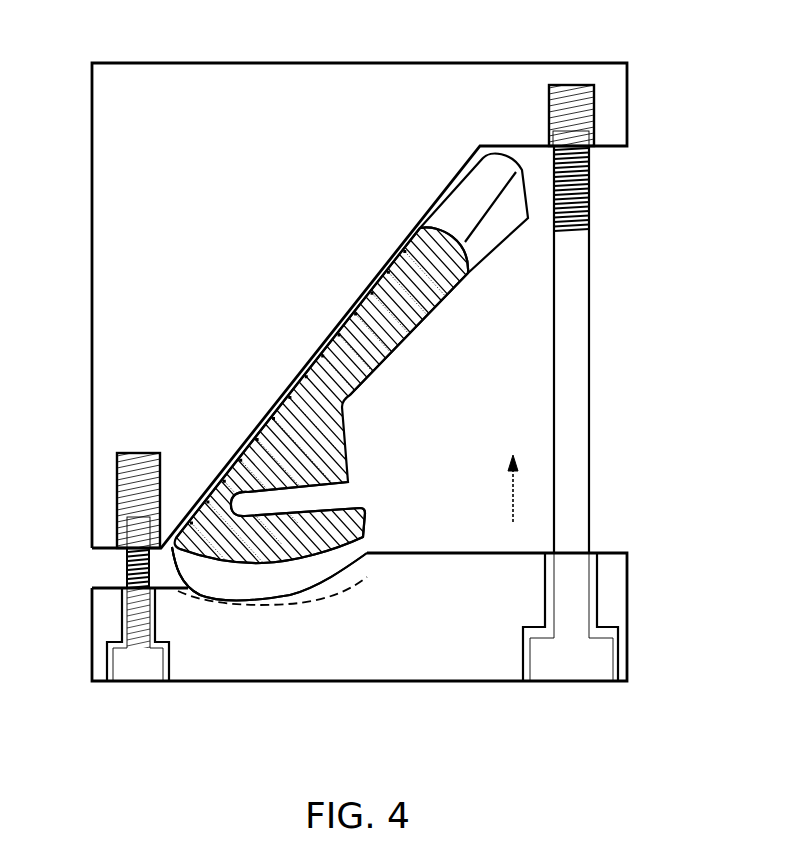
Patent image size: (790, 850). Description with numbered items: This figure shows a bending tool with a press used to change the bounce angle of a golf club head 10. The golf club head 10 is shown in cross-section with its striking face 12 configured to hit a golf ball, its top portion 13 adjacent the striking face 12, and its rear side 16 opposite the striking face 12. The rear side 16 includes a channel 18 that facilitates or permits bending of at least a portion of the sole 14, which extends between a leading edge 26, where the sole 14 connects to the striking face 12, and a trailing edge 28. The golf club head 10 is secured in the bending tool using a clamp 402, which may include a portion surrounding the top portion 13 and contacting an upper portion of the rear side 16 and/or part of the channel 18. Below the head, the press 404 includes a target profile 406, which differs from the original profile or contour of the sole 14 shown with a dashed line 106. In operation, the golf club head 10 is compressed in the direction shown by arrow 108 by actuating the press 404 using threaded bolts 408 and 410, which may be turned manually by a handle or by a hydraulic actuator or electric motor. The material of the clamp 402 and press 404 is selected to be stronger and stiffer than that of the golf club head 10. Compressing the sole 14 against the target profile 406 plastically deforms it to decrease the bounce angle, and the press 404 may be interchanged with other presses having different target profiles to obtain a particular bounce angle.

The golf club head 10 is at (435, 345).
The striking face 12 is at (310, 353).
The top portion 13 is at (500, 167).
The sole 14 is at (245, 562).
The rear side 16 is at (453, 287).
The channel 18 is at (333, 494).
The leading edge 26 is at (187, 590).
The trailing edge 28 is at (365, 537).
The dashed line 106 is at (313, 600).
The arrow 108 is at (513, 503).
The clamp 402 is at (228, 62).
The press 404 is at (628, 605).
The target profile 406 is at (367, 548).
The threaded bolt 408 is at (592, 342).
The threaded bolt 410 is at (127, 572).